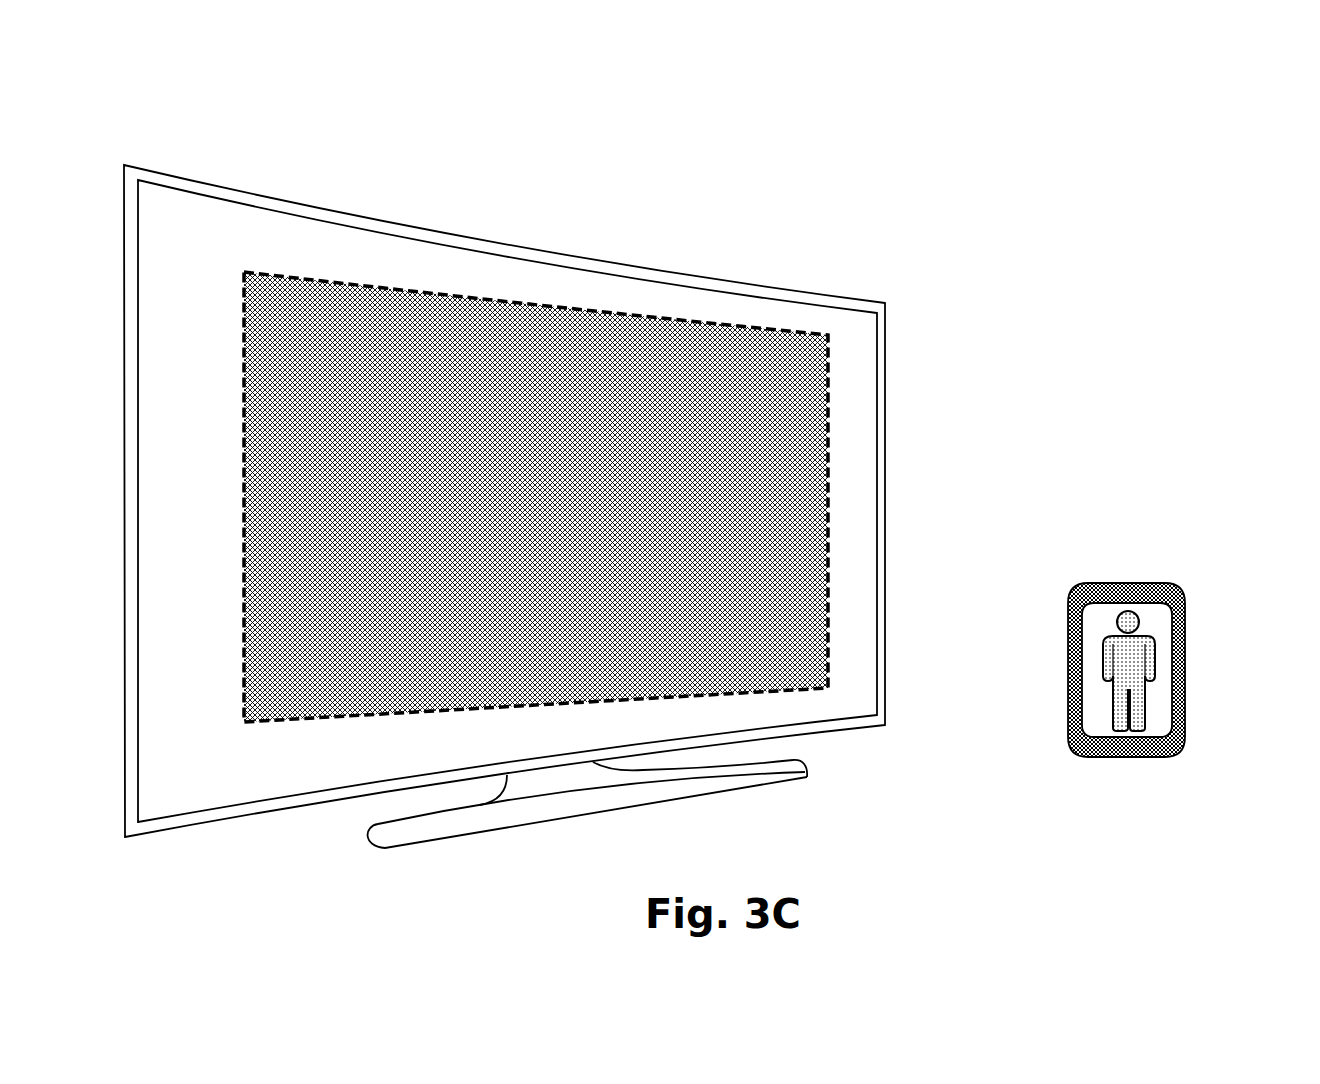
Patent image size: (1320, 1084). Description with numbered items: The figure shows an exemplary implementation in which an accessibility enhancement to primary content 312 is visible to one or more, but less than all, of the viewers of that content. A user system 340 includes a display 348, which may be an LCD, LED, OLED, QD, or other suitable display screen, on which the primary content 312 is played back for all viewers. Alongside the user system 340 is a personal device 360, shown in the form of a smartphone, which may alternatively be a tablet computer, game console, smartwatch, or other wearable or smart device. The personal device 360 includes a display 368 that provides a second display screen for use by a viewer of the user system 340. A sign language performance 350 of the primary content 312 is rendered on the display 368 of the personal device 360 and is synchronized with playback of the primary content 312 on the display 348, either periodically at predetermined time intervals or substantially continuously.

The user system 340 is at (770, 143).
The display 348 is at (257, 240).
The primary content 312 is at (387, 410).
The personal device 360 is at (1200, 603).
The display 368 is at (1100, 617).
The sign language performance 350 is at (1105, 659).